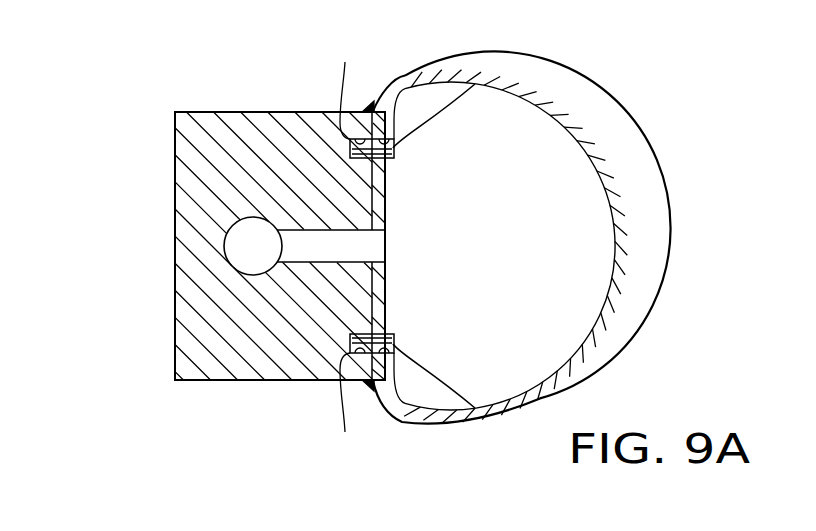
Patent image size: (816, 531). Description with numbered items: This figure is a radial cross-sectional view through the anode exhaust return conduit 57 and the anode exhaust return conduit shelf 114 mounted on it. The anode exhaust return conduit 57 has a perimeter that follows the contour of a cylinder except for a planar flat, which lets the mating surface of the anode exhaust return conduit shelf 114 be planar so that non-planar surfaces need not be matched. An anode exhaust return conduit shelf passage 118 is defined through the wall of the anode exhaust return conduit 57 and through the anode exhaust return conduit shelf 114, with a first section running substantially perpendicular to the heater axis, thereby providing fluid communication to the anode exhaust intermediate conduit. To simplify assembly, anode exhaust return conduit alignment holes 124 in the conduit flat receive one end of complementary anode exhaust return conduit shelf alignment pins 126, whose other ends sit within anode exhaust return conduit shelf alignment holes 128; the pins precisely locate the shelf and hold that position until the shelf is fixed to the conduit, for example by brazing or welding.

The anode exhaust return conduit shelf 114 is at (188, 117).
The anode exhaust return conduit shelf passage 118 is at (301, 247).
The anode exhaust return conduit 57 is at (600, 160).
The anode exhaust return conduit shelf alignment holes 128 is at (344, 247).
The anode exhaust return conduit alignment holes 124 is at (388, 139).
The anode exhaust return conduit shelf alignment pins 126 is at (466, 84).